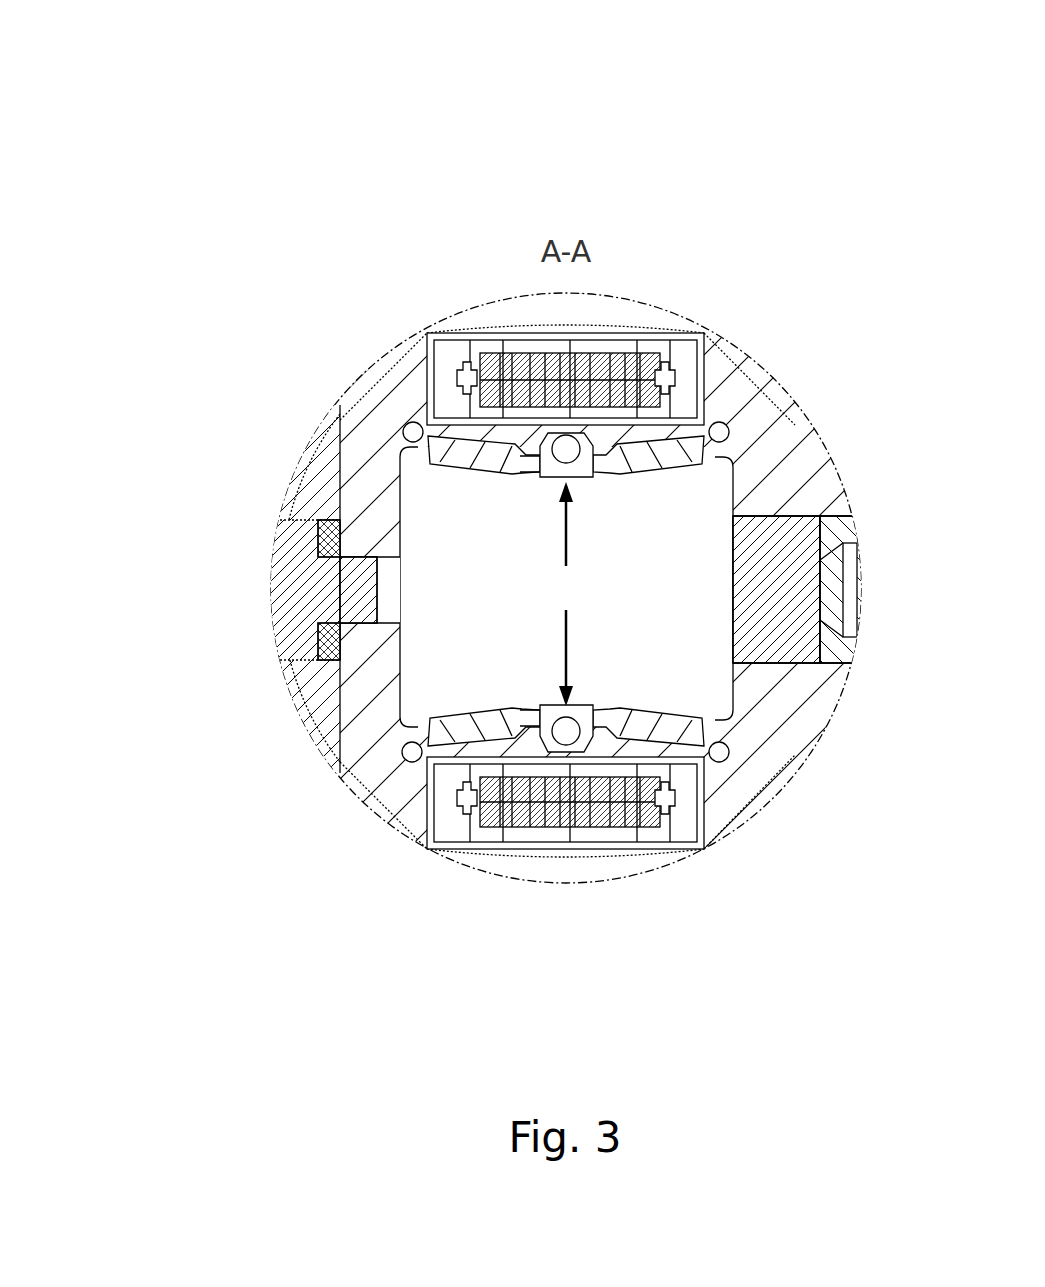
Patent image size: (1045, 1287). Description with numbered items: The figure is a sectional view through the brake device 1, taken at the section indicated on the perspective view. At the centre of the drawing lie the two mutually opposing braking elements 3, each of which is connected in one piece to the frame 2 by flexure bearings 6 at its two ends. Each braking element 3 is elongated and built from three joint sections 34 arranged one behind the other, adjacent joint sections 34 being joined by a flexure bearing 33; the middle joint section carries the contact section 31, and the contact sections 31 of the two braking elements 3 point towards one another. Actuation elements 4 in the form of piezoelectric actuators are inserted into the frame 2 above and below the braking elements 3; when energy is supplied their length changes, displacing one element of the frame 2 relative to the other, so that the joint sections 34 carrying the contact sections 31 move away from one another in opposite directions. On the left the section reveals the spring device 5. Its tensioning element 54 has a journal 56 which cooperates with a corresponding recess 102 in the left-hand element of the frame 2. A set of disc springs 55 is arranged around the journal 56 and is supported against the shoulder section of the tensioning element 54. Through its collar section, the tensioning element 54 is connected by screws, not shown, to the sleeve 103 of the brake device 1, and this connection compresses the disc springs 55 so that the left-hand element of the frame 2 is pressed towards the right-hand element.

The brake device 1 is at (392, 194).
The frame 2 is at (787, 428).
The braking element 3 is at (520, 575).
The contact section 31 is at (565, 594).
The flexure bearing 33 is at (528, 460).
The joint section 34 is at (462, 445).
The actuation element 4 is at (613, 343).
The spring device 5 is at (236, 589).
The tensioning element 54 is at (287, 622).
The disc spring 55 is at (330, 532).
The journal 56 is at (352, 592).
The flexure bearing 6 is at (410, 443).
The recess 102 is at (407, 570).
The sleeve 103 is at (308, 712).